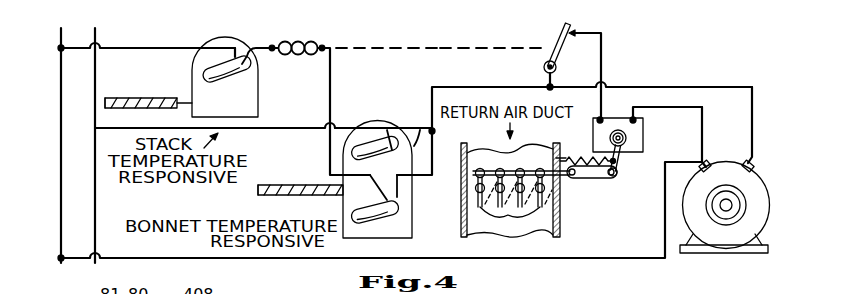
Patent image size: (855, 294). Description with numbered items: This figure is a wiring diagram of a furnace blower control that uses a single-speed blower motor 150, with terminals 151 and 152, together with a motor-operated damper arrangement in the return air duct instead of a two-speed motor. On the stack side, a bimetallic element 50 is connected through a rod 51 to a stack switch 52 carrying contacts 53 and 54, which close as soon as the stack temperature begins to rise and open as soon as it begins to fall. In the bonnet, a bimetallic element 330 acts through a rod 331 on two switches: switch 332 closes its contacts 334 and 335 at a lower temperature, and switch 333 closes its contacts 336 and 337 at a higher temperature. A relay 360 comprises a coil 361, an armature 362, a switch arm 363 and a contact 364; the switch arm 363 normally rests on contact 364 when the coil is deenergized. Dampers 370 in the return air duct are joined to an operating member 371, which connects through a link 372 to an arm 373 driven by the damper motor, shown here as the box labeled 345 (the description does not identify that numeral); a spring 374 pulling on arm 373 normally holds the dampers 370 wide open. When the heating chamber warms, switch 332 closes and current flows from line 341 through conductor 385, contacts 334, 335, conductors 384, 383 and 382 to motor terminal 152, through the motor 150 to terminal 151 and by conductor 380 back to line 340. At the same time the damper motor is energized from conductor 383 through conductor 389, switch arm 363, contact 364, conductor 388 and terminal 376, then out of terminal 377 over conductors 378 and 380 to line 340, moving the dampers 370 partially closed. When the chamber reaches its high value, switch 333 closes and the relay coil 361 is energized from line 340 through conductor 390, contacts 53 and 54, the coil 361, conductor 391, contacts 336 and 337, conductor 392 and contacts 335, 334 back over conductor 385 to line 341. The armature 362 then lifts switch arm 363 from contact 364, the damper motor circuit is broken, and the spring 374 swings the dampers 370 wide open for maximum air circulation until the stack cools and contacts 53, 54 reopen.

The bimetallic element 50 is at (153, 97).
The rod 51 is at (106, 98).
The switch 52 is at (237, 84).
The contact 53 is at (243, 42).
The contact 54 is at (246, 50).
The motor 150 is at (695, 226).
The terminal 151 is at (712, 160).
The terminal 152 is at (753, 160).
The bimetallic element 330 is at (268, 208).
The rod 331 is at (261, 184).
The switch 332 is at (363, 144).
The switch 333 is at (394, 219).
The contact 334 is at (387, 129).
The contact 335 is at (418, 129).
The contact 336 is at (378, 196).
The contact 337 is at (400, 196).
The line 340 is at (59, 184).
The line 341 is at (92, 182).
The relay solenoid 345 is at (646, 134).
The relay 360 is at (407, 40).
The coil 361 is at (306, 57).
The armature 362 is at (456, 47).
The switch arm 363 is at (558, 44).
The contact 364 is at (574, 31).
The dampers 370 is at (512, 201).
The operating member 371 is at (506, 169).
The link 372 is at (591, 180).
The arm 373 is at (616, 165).
The spring 374 is at (582, 156).
The terminal 376 is at (606, 117).
The terminal 377 is at (640, 117).
The conductor 378 is at (704, 128).
The conductor 380 is at (455, 257).
The conductor 382 is at (717, 86).
The conductor 383 is at (477, 85).
The conductor 384 is at (426, 126).
The conductor 385 is at (303, 126).
The conductor 388 is at (603, 58).
The conductor 389 is at (545, 86).
The conductor 390 is at (157, 46).
The conductor 391 is at (332, 64).
The conductor 392 is at (434, 153).